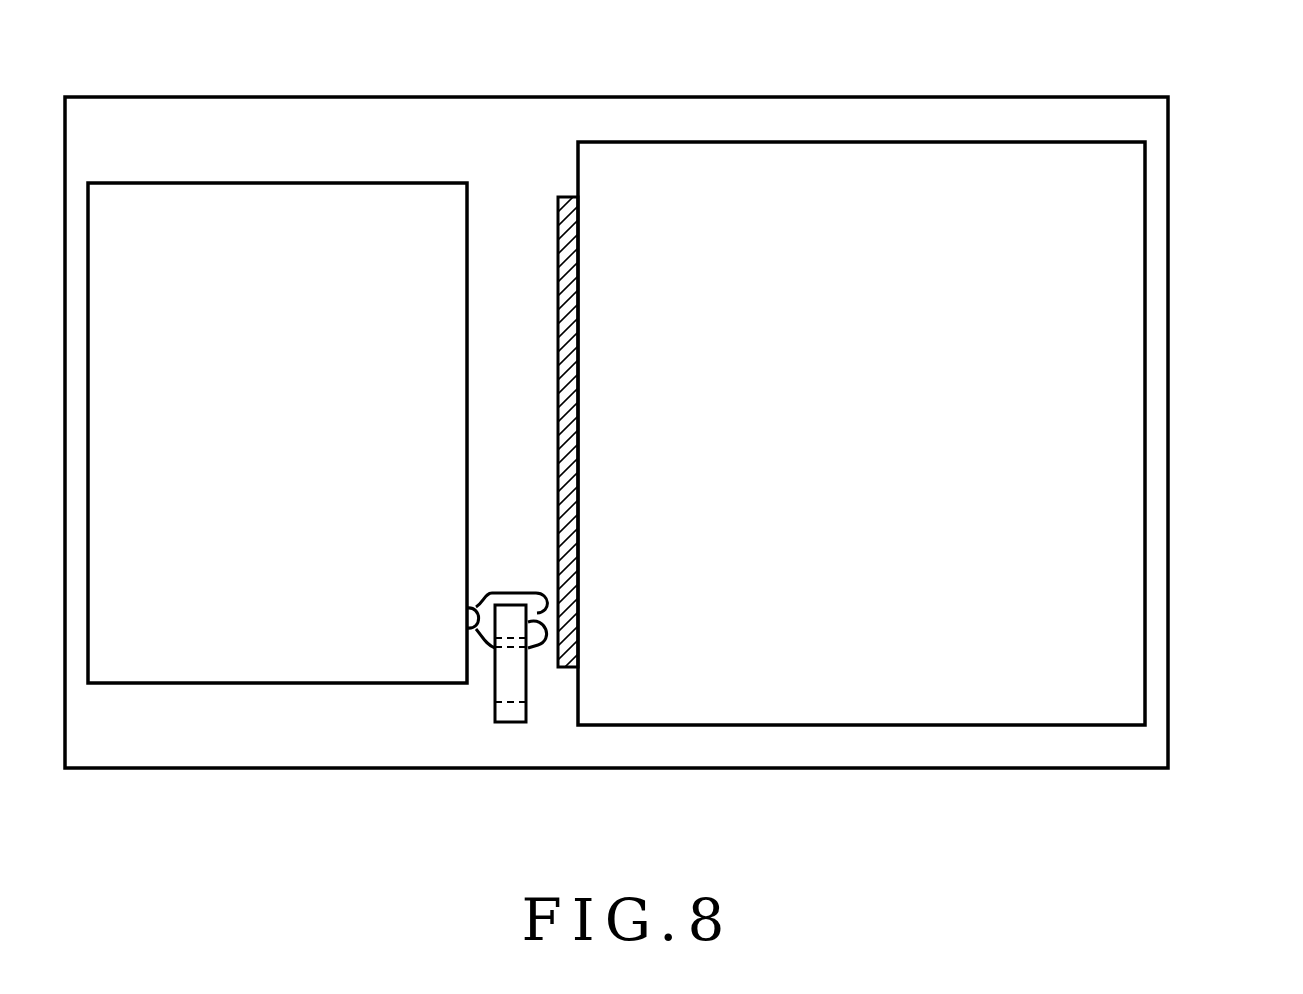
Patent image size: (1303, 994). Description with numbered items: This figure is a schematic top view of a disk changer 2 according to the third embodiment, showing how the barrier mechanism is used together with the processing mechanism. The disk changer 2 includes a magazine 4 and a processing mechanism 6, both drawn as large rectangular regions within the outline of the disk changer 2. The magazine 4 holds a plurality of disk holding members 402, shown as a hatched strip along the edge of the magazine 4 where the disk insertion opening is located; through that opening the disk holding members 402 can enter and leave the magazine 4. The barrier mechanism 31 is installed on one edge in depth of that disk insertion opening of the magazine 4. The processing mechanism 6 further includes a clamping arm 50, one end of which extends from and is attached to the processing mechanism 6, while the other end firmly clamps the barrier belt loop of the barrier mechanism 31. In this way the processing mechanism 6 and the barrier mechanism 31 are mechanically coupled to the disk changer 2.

The disk changer 2 is at (1228, 117).
The magazine 4 is at (908, 172).
The processing mechanism 6 is at (176, 198).
The barrier mechanism 31 is at (512, 742).
The clamping arm 50 is at (487, 600).
The disk holding member 402 is at (578, 218).